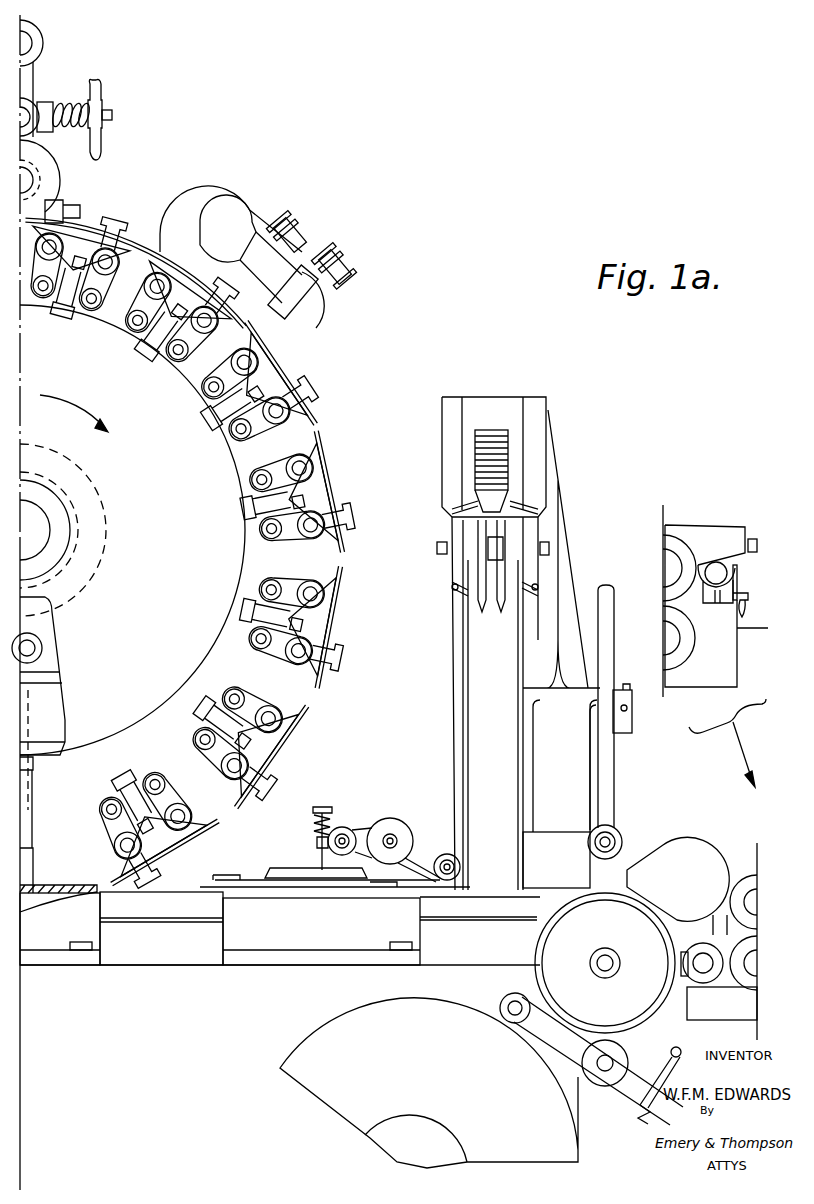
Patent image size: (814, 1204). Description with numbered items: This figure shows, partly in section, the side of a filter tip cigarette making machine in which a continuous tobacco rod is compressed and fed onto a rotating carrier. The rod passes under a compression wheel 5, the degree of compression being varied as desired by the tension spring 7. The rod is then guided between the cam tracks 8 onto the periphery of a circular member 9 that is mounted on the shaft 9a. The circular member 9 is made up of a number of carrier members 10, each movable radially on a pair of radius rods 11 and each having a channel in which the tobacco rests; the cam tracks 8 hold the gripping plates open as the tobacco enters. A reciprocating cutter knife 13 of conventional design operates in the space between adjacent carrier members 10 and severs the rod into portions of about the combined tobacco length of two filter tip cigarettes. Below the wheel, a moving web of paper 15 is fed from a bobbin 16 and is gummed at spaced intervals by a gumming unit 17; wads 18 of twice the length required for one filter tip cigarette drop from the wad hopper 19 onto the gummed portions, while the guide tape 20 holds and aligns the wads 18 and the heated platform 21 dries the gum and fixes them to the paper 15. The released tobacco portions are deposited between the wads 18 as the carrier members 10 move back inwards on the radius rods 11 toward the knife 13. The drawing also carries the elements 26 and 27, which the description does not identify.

The compression wheel 5 is at (58, 172).
The tension spring 7 is at (100, 103).
The cam tracks 8 is at (82, 210).
The circular member 9 is at (132, 530).
The shaft 9a is at (35, 545).
The carrier members 10 is at (233, 730).
The radius rods 11 is at (215, 705).
The reciprocating cutter knife 13 is at (240, 323).
The web of paper 15 is at (43, 895).
The bobbin 16 is at (340, 1048).
The gumming unit 17 is at (757, 858).
The wads 18 is at (247, 883).
The wad hopper 19 is at (505, 398).
The guide tape 20 is at (330, 830).
The heated platform 21 is at (200, 903).
The support bar 26 is at (80, 898).
The adjusting bolt 27 is at (322, 668).